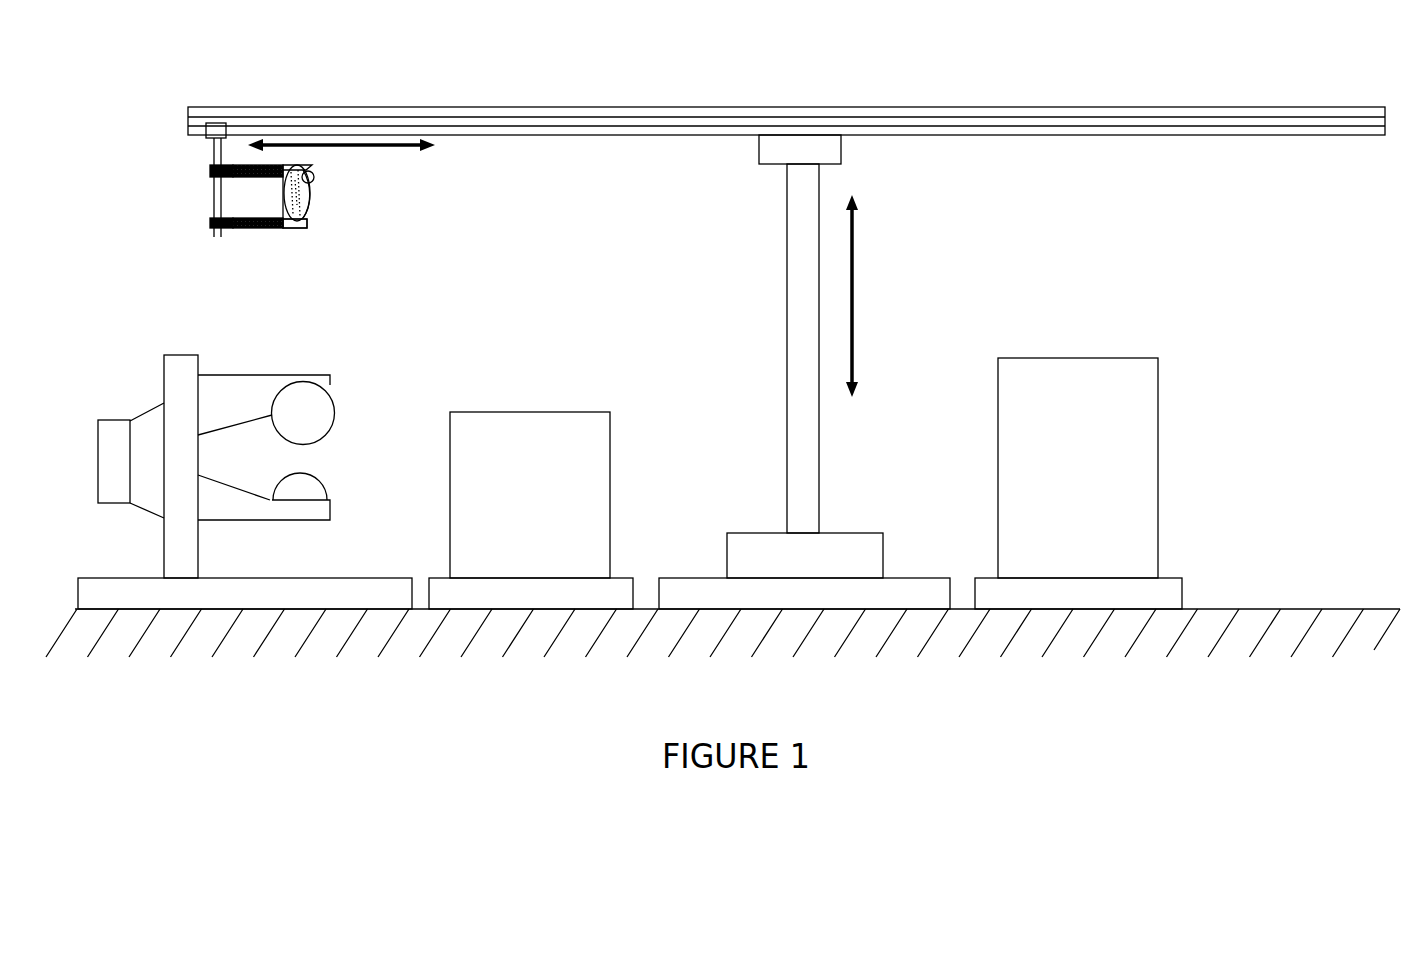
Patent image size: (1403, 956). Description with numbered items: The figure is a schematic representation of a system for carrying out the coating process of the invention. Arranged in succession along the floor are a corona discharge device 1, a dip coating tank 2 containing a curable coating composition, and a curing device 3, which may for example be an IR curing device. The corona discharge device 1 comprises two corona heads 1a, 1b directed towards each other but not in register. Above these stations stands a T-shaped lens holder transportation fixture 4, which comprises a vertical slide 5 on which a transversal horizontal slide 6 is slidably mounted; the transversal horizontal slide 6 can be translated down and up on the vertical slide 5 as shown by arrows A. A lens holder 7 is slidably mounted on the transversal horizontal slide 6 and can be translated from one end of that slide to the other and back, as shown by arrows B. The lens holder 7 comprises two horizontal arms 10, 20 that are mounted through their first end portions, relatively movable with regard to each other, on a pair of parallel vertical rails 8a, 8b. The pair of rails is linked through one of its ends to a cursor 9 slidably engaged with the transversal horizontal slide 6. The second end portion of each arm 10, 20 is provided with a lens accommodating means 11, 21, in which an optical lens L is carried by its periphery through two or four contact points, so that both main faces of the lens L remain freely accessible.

The corona discharge device 1 is at (152, 403).
The corona head 1a is at (336, 416).
The corona head 1b is at (330, 484).
The dip coating tank 2 is at (519, 412).
The curing device 3 is at (1020, 358).
The lens holder transportation fixture 4 is at (870, 100).
The vertical slide 5 is at (787, 305).
The transversal horizontal slide 6 is at (605, 136).
The lens holder 7 is at (190, 194).
The vertical rail 8a is at (220, 152).
The vertical rail 8b is at (262, 166).
The cursor 9 is at (206, 130).
The horizontal arm 10 is at (292, 229).
The lens accommodating means 11 is at (310, 224).
The horizontal arm 20 is at (314, 182).
The lens accommodating means 21 is at (317, 202).
The optical lens L is at (311, 203).
The arrows A is at (853, 313).
The arrows B is at (372, 148).